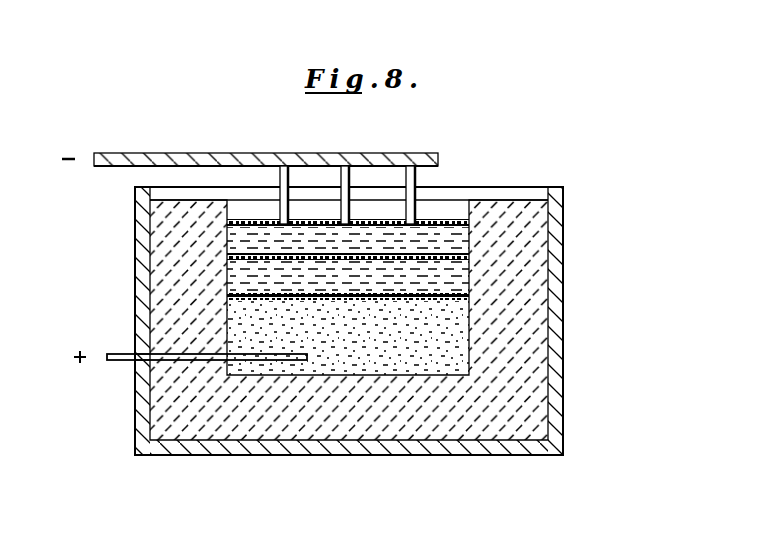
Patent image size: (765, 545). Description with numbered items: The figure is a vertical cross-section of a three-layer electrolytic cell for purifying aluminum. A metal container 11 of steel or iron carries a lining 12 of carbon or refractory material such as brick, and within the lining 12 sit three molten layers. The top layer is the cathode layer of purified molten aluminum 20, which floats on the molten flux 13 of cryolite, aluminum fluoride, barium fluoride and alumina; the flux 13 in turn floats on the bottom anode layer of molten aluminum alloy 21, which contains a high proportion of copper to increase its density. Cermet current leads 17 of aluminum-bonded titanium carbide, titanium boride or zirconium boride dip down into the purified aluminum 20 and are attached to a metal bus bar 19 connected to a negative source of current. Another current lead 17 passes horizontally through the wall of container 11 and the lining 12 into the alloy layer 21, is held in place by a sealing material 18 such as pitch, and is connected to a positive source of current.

The metal container 11 is at (563, 215).
The lining 12 is at (536, 243).
The molten flux 13 is at (353, 282).
The cermet current lead 17 is at (416, 172).
The sealing material 18 is at (144, 352).
The metal bus bar 19 is at (437, 153).
The layer of purified molten aluminum 20 is at (353, 248).
The layer of molten aluminum alloy 21 is at (353, 330).